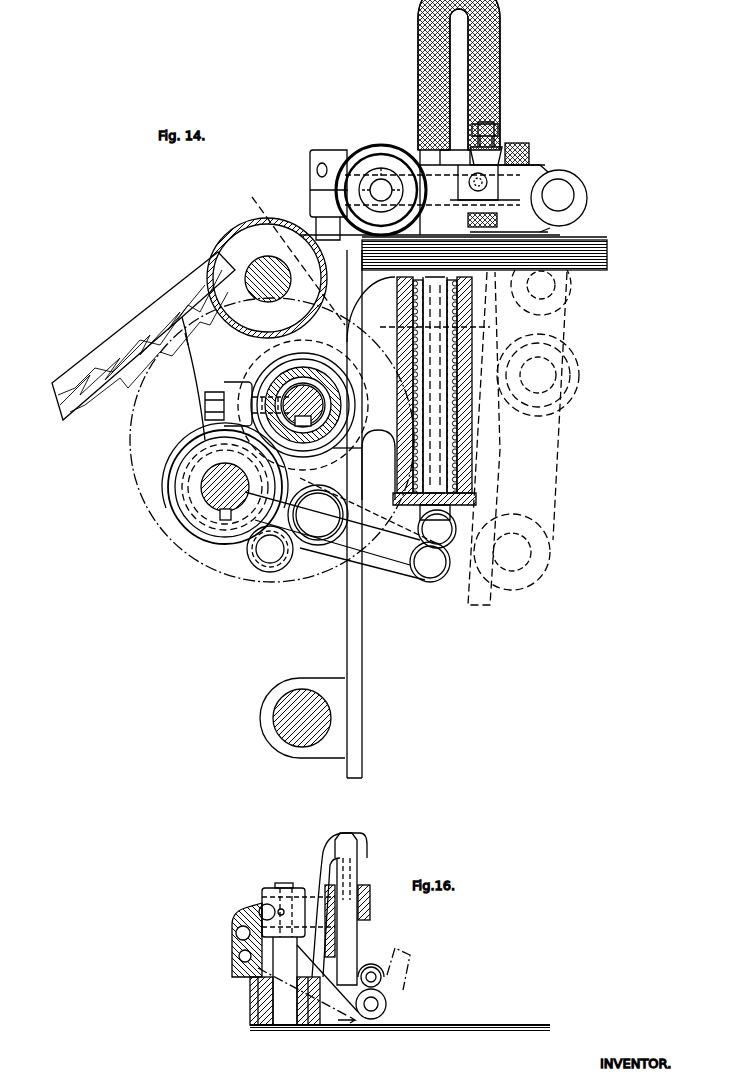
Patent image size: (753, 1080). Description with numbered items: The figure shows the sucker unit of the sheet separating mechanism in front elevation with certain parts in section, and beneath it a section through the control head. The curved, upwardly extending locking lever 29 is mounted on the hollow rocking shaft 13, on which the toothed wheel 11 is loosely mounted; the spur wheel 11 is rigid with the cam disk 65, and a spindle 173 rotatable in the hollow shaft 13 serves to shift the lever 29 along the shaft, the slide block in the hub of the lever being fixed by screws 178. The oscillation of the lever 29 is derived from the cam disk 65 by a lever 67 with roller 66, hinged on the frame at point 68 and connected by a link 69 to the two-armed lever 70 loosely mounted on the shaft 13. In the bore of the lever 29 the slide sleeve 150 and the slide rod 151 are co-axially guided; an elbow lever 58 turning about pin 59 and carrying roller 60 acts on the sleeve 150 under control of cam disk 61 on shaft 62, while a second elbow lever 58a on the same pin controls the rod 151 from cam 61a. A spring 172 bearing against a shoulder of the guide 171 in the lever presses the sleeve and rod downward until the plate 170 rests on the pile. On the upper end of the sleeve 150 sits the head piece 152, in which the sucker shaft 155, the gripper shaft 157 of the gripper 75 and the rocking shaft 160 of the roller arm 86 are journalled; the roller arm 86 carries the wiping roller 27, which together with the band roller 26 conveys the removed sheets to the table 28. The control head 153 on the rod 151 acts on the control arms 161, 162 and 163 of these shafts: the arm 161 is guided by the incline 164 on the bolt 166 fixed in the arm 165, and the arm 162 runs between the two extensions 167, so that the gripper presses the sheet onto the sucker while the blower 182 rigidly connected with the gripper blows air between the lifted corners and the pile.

In FIG. 14, the toothed wheel 11 is at (155, 495).
In FIG. 14, the hollow shaft 13 is at (273, 378).
In FIG. 14, the band roller 26 is at (232, 246).
In FIG. 14, the wiping roller 27 is at (373, 142).
In FIG. 14, the table 28 is at (110, 342).
In FIG. 14, the locking lever 29 is at (378, 420).
In FIG. 14, the elbow lever 58 is at (383, 505).
In FIG. 14, the second elbow lever 58a is at (402, 563).
In FIG. 14, the pin 59 is at (313, 525).
In FIG. 14, the roller 60 is at (257, 567).
In FIG. 14, the cam disk 61 is at (210, 537).
In FIG. 14, the cam 61a is at (193, 438).
In FIG. 14, the shaft 62 is at (210, 498).
In FIG. 14, the cam disk 65 is at (197, 335).
In FIG. 14, the roller 66 is at (573, 360).
In FIG. 14, the lever 67 is at (558, 318).
In FIG. 14, the pivot point 68 is at (515, 558).
In FIG. 14, the link 69 is at (575, 237).
In FIG. 14, the two-armed lever 70 is at (288, 252).
In FIG. 14, the gripper 75 is at (327, 238).
In FIG. 14, the roller arm 86 is at (535, 178).
In FIG. 14, the slide sleeve 150 is at (405, 484).
In FIG. 14, the slide rod 151 is at (435, 385).
In FIG. 16, the slide rod 151 is at (283, 958).
In FIG. 16, the head piece 152 is at (252, 1012).
In FIG. 16, the control head 153 is at (272, 892).
In FIG. 16, the sucker shaft 155 is at (370, 1007).
In FIG. 14, the gripper shaft 157 is at (318, 167).
In FIG. 16, the gripper shaft 157 is at (243, 933).
In FIG. 14, the rocking shaft 160 is at (559, 193).
In FIG. 16, the control arm 161 is at (380, 970).
In FIG. 16, the control arm 162 is at (253, 920).
In FIG. 14, the control arm 163 is at (523, 190).
In FIG. 16, the incline 164 is at (345, 955).
In FIG. 16, the arm 165 is at (317, 873).
In FIG. 16, the bolt 166 is at (345, 875).
In FIG. 16, the extensions 167 is at (260, 895).
In FIG. 14, the plate 170 is at (562, 210).
In FIG. 14, the post 171 is at (400, 344).
In FIG. 14, the pressure spring 172 is at (405, 358).
In FIG. 14, the spindle 173 is at (308, 392).
In FIG. 14, the screws 178 is at (213, 402).
In FIG. 14, the blower 182 is at (318, 204).